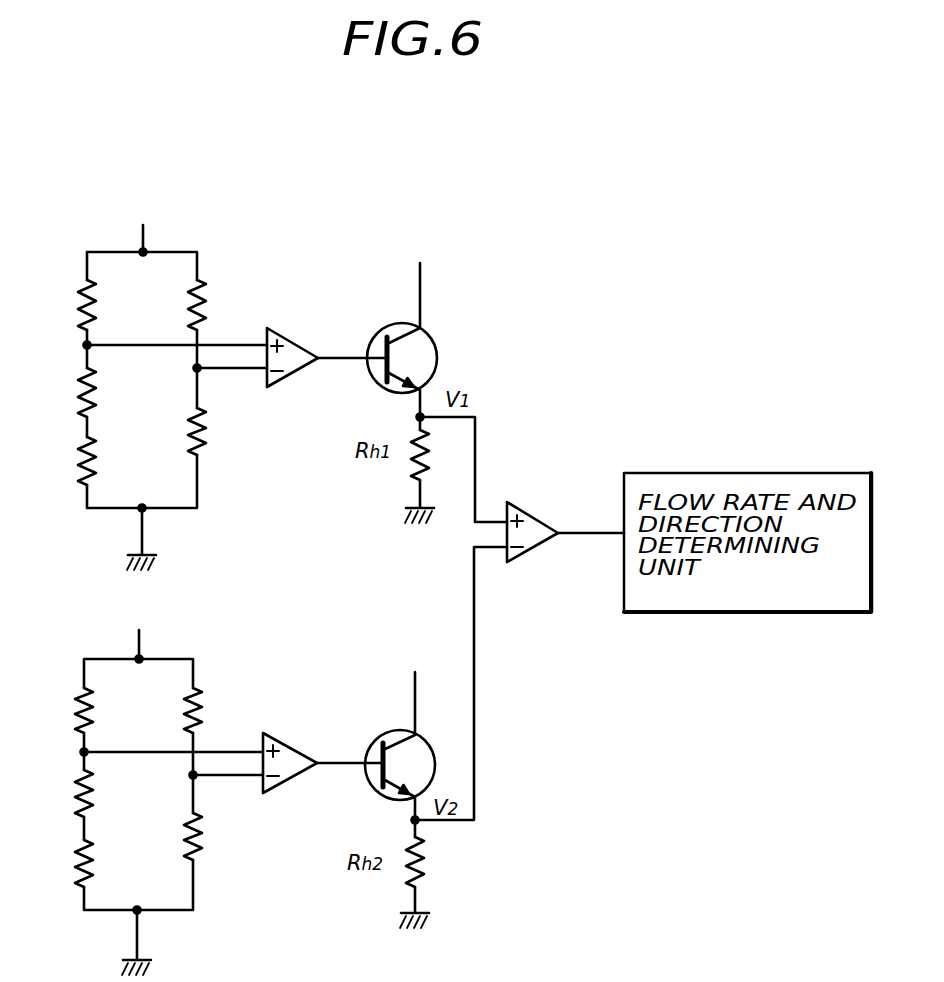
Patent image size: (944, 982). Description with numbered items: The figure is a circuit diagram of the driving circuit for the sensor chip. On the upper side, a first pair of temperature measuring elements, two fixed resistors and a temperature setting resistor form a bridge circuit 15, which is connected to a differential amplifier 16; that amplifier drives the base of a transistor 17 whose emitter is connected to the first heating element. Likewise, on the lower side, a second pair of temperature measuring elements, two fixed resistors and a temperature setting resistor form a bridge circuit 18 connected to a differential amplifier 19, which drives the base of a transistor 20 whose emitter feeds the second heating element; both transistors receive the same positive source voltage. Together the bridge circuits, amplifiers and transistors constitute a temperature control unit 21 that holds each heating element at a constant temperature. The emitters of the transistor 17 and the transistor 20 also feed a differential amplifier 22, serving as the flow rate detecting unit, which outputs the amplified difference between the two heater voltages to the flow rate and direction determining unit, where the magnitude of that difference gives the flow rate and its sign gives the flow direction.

The bridge circuit 15 is at (113, 272).
The differential amplifier 16 is at (290, 338).
The transistor 17 is at (435, 347).
The bridge circuit 18 is at (107, 672).
The differential amplifier 19 is at (293, 791).
The transistor 20 is at (432, 745).
The temperature control unit 21 is at (438, 544).
The differential amplifier 22 is at (537, 548).